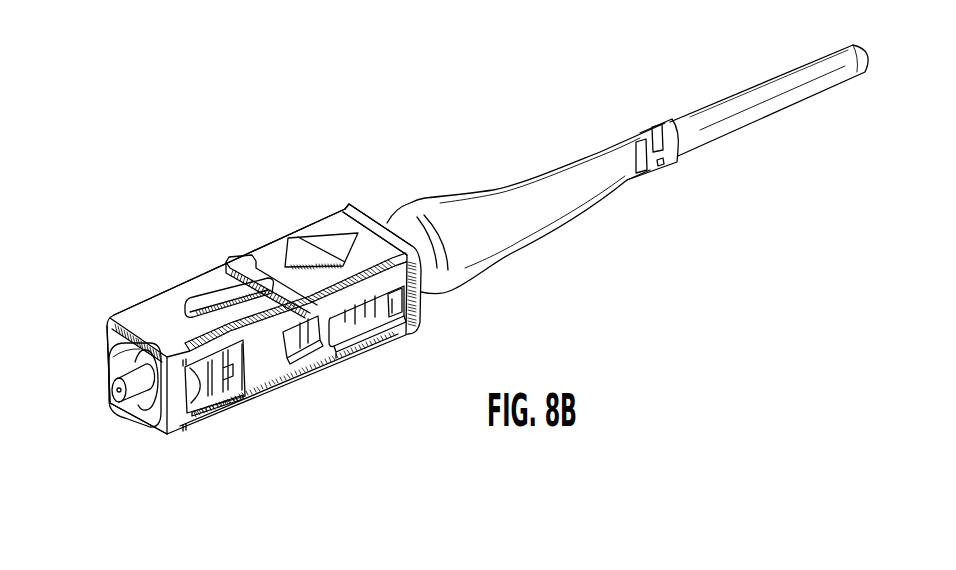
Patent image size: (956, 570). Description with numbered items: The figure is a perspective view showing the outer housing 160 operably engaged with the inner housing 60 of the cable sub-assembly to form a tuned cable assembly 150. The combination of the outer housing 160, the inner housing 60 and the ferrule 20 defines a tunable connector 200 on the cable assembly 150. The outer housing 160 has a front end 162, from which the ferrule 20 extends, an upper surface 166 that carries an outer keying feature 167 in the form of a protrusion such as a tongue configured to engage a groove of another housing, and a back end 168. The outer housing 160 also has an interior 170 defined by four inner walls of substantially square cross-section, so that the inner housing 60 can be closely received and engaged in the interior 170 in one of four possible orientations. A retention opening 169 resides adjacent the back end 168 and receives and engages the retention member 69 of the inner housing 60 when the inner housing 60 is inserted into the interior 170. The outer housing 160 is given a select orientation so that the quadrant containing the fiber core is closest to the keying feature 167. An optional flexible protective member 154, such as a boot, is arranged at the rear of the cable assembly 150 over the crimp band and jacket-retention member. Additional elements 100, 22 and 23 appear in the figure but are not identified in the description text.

The cable assembly 150 is at (578, 51).
The fiber optic cable 100 is at (724, 98).
The flexible protective member 154 is at (493, 203).
The tunable connector 200 is at (272, 199).
The outer housing 160 is at (140, 318).
The upper surface 166 is at (160, 305).
The outer keying feature 167 is at (214, 292).
The front end 162 is at (106, 337).
The ferrule assembly 23 is at (107, 377).
The ferrule 22 is at (118, 400).
The ferrule 20 is at (143, 387).
The inner housing 60 is at (233, 392).
The interior 170 is at (347, 326).
The retention opening 169 is at (372, 340).
The retention member 69 is at (410, 346).
The back end 168 is at (428, 318).